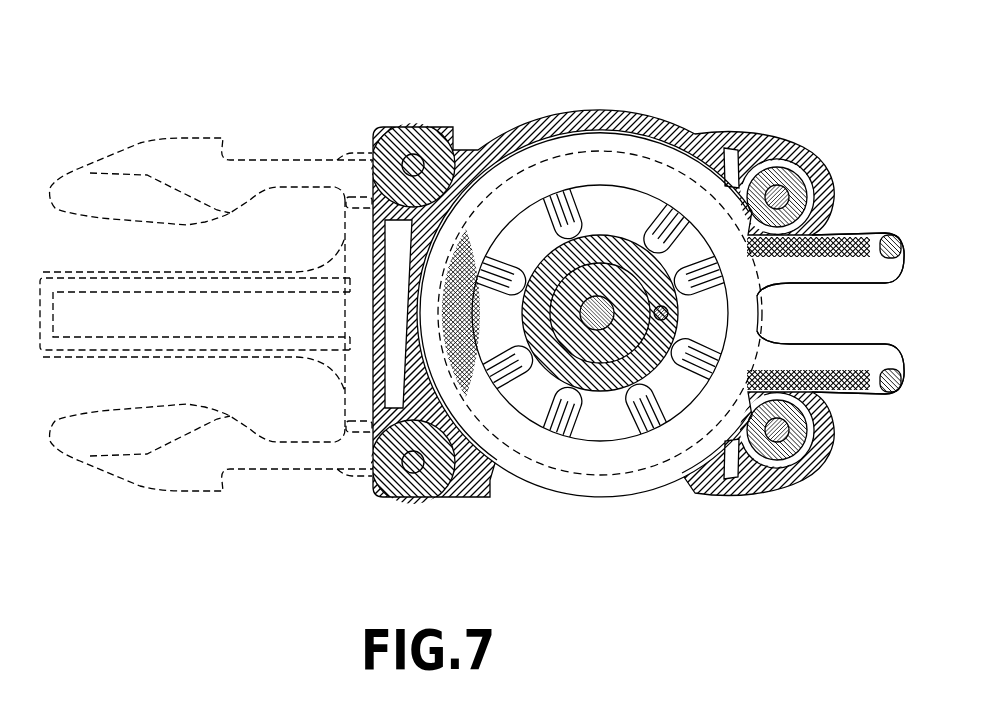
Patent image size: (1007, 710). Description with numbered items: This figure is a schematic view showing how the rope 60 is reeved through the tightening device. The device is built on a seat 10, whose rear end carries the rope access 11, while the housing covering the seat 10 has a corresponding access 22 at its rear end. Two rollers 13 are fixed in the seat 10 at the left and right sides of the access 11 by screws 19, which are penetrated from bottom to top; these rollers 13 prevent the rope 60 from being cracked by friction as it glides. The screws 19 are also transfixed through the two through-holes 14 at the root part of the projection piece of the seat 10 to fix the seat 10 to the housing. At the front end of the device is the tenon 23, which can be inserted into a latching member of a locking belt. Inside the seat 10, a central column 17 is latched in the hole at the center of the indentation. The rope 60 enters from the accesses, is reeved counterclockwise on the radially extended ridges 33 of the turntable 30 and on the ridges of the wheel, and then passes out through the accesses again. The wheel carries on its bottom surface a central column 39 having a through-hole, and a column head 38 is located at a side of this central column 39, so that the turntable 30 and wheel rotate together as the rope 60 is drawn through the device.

The seat 10 is at (578, 108).
The rope access 11 is at (838, 398).
The access 22 is at (562, 311).
The rollers 13 is at (772, 178).
The through-holes 14 is at (440, 148).
The central column 17 is at (597, 325).
The screws 19 is at (408, 155).
The tenon 23 is at (185, 152).
The turntable 30 is at (612, 203).
The ridges 33 is at (555, 205).
The column head 38 is at (668, 313).
The central column 39 is at (622, 345).
The rope 60 is at (893, 232).